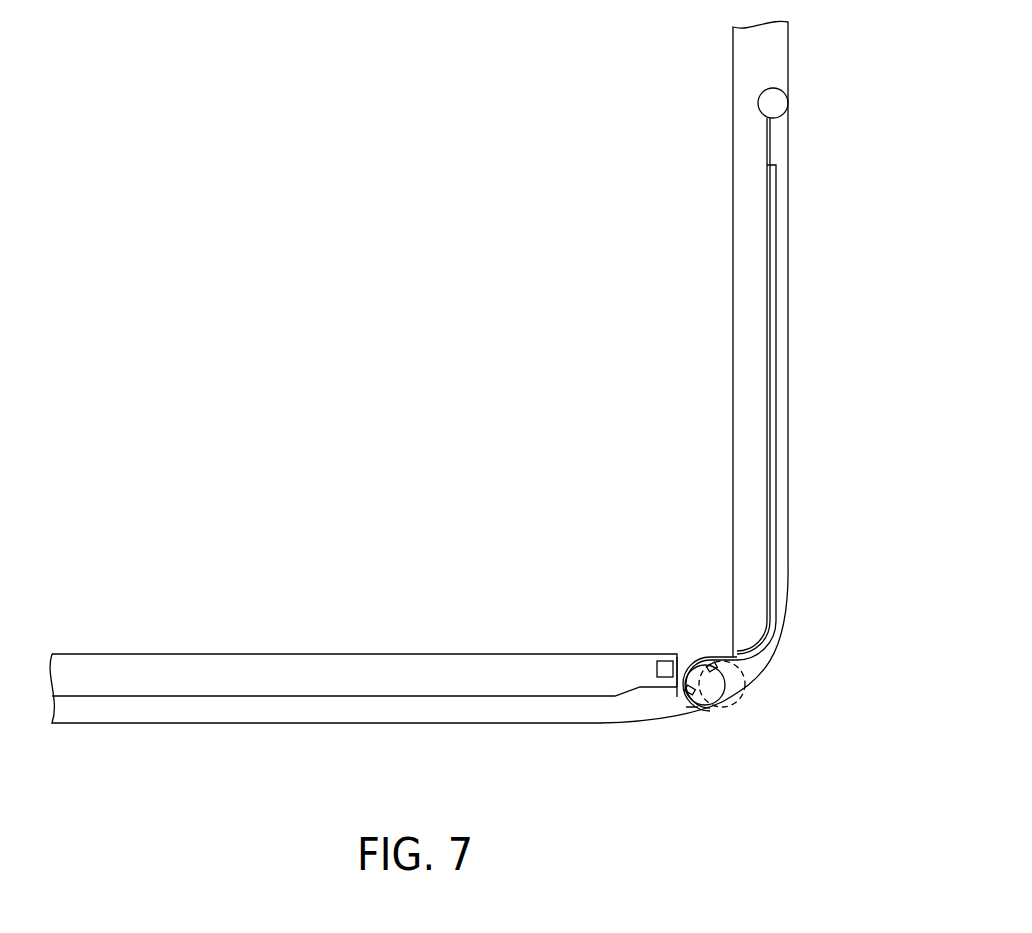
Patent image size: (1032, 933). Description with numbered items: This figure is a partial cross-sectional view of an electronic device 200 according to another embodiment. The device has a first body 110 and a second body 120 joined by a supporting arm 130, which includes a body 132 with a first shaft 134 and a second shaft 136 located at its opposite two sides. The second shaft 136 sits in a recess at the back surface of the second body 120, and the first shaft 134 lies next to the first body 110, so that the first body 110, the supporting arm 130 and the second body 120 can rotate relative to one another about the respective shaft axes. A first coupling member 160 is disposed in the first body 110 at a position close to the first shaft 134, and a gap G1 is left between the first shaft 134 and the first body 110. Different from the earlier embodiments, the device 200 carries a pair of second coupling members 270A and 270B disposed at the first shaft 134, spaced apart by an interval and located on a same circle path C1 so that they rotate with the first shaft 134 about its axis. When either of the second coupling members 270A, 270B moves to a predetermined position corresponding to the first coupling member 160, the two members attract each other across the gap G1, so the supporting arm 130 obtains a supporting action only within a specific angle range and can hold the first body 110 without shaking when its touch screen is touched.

The electronic device 200 is at (152, 73).
The first body 110 is at (423, 672).
The second body 120 is at (737, 50).
The supporting arm 130 is at (598, 63).
The body 132 is at (782, 327).
The first shaft 134 is at (702, 678).
The second shaft 136 is at (773, 103).
The first coupling member 160 is at (663, 677).
The second coupling member 270A is at (688, 708).
The second coupling member 270B is at (714, 673).
The gap G1 is at (684, 649).
The circle path C1 is at (758, 692).